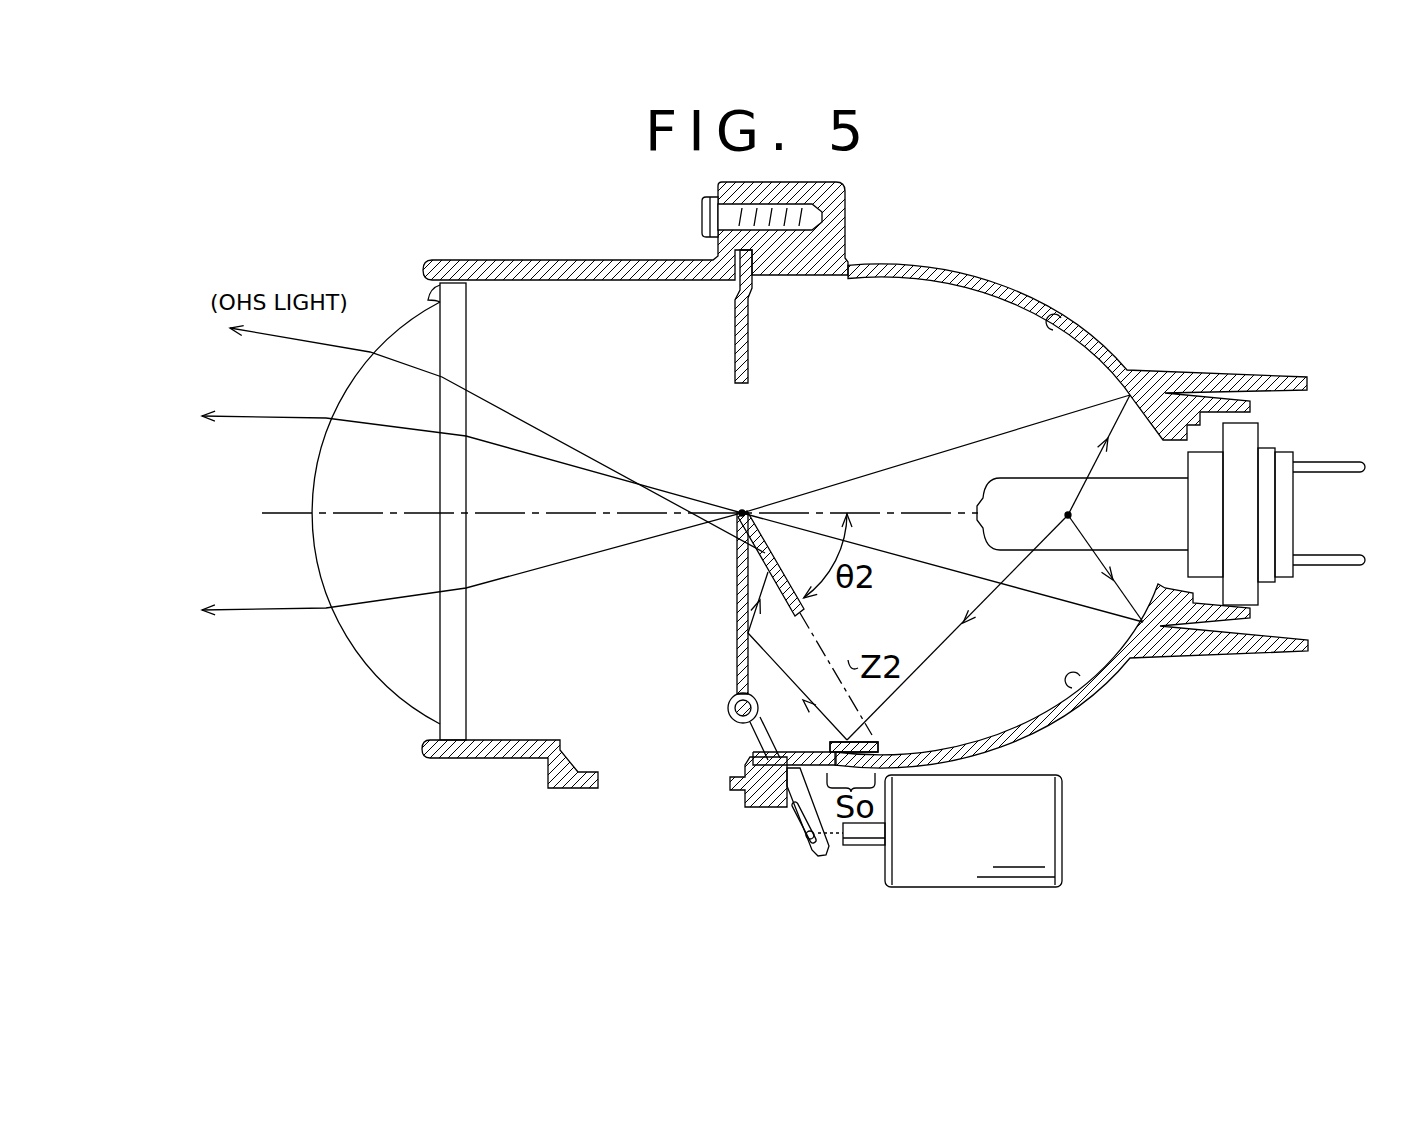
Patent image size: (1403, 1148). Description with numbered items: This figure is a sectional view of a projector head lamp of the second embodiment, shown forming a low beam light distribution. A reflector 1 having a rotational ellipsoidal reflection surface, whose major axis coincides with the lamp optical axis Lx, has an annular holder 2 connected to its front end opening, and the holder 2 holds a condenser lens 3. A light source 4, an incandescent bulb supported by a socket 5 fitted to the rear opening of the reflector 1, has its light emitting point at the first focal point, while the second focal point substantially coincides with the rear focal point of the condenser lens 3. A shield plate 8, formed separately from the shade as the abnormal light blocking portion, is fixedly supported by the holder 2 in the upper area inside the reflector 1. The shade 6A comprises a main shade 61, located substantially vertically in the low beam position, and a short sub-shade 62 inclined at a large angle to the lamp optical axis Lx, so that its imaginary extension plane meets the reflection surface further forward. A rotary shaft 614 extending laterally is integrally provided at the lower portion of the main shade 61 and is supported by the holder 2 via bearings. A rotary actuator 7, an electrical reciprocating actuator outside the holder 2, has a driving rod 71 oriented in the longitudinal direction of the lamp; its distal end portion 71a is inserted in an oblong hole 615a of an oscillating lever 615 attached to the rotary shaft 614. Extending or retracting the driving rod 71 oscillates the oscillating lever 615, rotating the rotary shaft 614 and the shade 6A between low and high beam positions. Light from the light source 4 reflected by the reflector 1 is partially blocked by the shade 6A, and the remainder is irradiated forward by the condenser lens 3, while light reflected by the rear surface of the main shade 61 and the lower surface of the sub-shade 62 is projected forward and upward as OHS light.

The reflector 1 is at (930, 268).
The holder 2 is at (614, 266).
The condenser lens 3 is at (395, 668).
The light source 4 is at (1133, 492).
The socket 5 is at (1268, 450).
The shade 6A is at (764, 654).
The main shade 61 is at (737, 640).
The sub-shade 62 is at (812, 612).
The rotary shaft 614 is at (728, 710).
The oscillating lever 615 is at (756, 822).
The oblong hole 615a is at (783, 810).
The rotary actuator 7 is at (1040, 845).
The driving rod 71 is at (866, 840).
The distal end portion 71a is at (814, 856).
The shield plate 8 is at (750, 360).
The lamp optical axis Lx is at (264, 513).